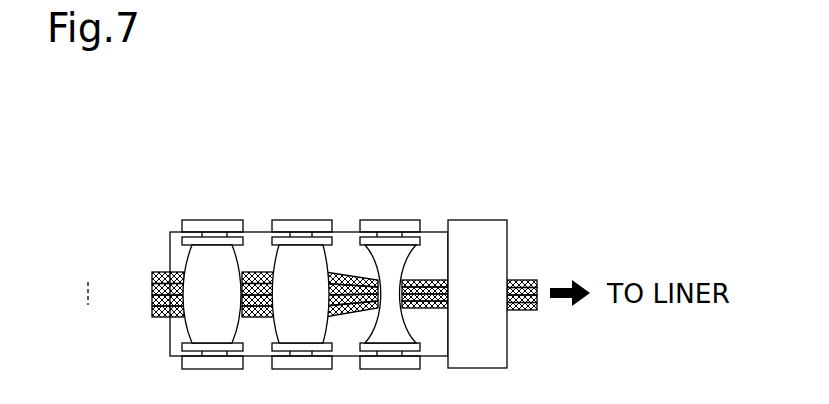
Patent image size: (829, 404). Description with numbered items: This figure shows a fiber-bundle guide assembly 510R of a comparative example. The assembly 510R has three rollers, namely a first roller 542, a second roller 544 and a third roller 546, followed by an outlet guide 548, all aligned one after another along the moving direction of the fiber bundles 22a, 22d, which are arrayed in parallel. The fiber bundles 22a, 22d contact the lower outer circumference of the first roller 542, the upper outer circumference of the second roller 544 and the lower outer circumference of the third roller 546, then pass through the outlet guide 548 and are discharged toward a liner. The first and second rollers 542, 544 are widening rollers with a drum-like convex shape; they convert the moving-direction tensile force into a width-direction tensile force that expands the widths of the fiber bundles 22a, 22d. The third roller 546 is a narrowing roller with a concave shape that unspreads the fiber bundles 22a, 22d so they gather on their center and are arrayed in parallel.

The fiber-bundle guide assembly 510R is at (140, 198).
The first roller 542 is at (198, 248).
The second roller 544 is at (290, 248).
The third roller 546 is at (378, 248).
The outlet guide 548 is at (480, 250).
The fiber bundle 22a is at (152, 280).
The fiber bundle 22d is at (152, 311).